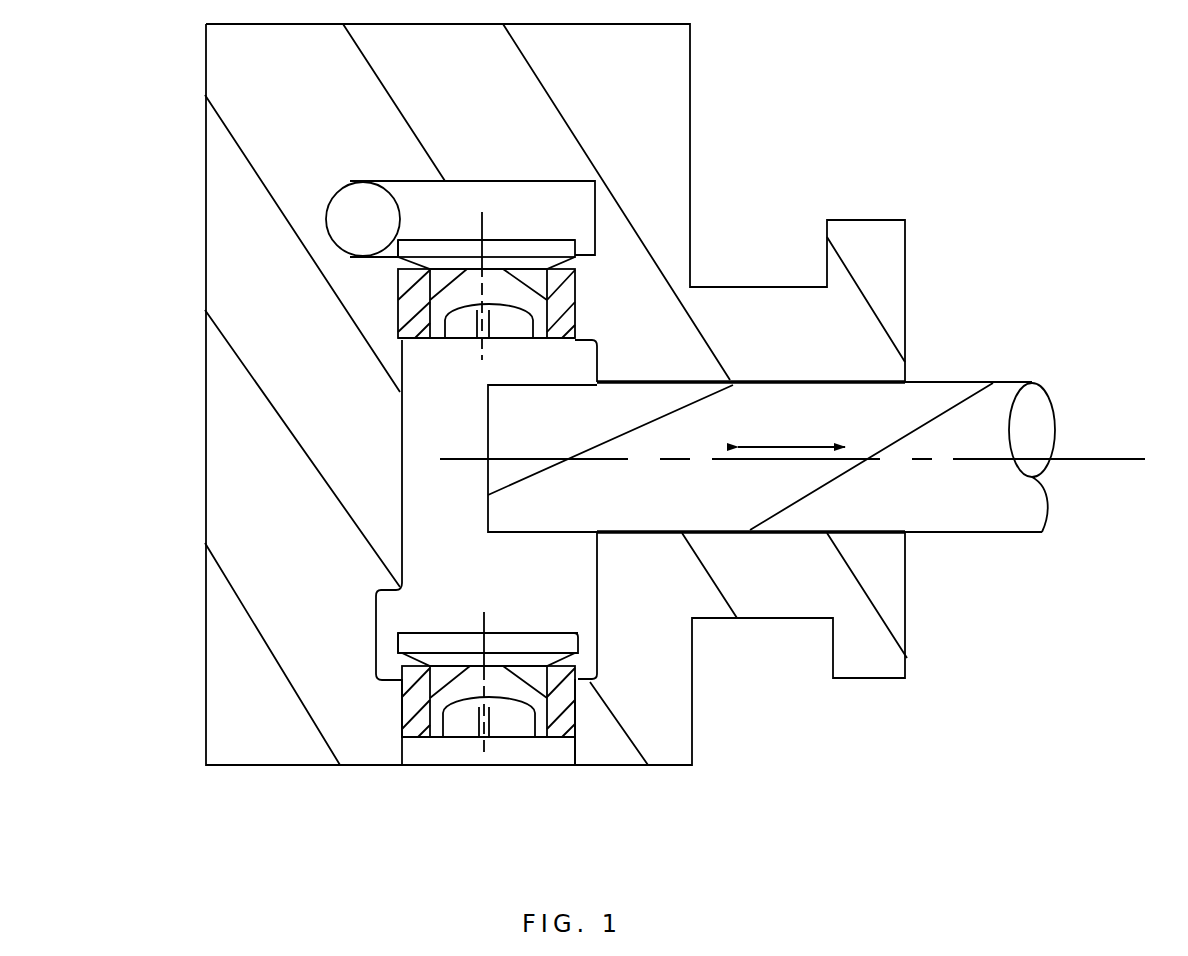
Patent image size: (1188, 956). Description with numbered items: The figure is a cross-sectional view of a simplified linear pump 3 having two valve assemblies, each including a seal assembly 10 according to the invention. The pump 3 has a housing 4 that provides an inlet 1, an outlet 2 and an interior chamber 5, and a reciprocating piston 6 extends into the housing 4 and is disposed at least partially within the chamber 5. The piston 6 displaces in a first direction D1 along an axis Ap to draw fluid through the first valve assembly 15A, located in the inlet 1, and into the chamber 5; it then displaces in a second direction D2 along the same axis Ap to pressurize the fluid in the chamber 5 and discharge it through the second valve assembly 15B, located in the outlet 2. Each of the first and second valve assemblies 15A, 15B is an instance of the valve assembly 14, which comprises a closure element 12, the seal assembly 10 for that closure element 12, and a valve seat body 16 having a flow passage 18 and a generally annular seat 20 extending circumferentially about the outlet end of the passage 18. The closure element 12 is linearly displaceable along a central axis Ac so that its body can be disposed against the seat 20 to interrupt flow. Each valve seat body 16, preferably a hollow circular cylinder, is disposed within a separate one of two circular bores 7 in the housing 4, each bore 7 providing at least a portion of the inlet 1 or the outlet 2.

The inlet 1 is at (405, 752).
The outlet 2 is at (408, 202).
The linear pump 3 is at (138, 253).
The housing 4 is at (217, 430).
The interior chamber 5 is at (420, 422).
The reciprocating piston 6 is at (965, 380).
The circular bore 7 is at (570, 312).
The seal assembly 10 is at (397, 259).
The closure element 12 is at (533, 239).
The valve assembly 14 is at (492, 224).
The first valve assembly 15A is at (392, 706).
The second valve assembly 15B is at (590, 268).
The valve seat body 16 is at (403, 315).
The flow passage 18 is at (534, 279).
The annular seat 20 is at (420, 263).
The central axis Ac is at (486, 356).
The piston axis Ap is at (1108, 455).
The first direction D1 is at (798, 429).
The second direction D2 is at (760, 426).